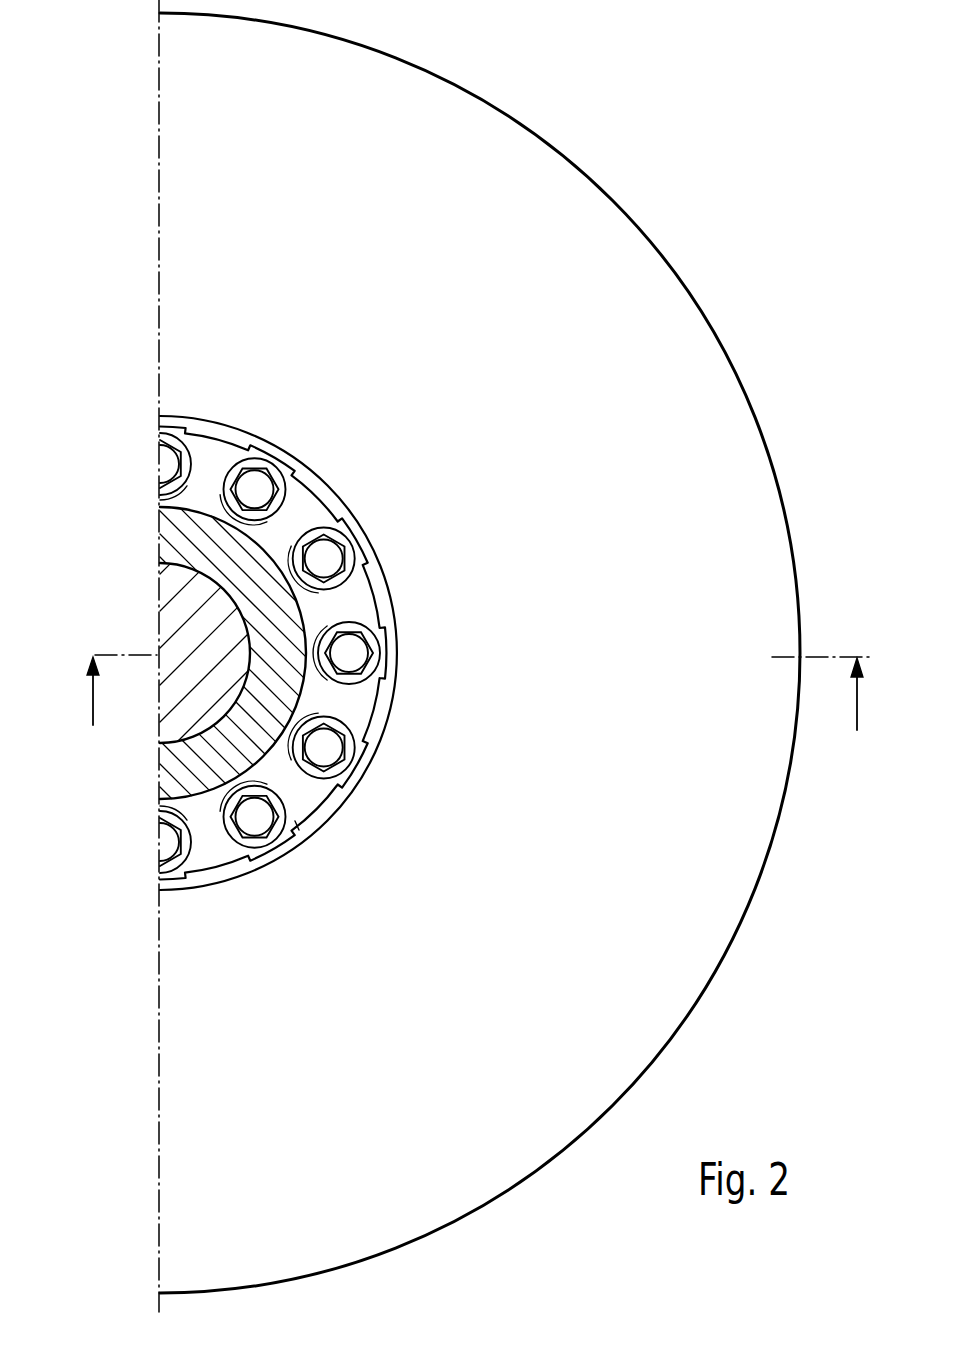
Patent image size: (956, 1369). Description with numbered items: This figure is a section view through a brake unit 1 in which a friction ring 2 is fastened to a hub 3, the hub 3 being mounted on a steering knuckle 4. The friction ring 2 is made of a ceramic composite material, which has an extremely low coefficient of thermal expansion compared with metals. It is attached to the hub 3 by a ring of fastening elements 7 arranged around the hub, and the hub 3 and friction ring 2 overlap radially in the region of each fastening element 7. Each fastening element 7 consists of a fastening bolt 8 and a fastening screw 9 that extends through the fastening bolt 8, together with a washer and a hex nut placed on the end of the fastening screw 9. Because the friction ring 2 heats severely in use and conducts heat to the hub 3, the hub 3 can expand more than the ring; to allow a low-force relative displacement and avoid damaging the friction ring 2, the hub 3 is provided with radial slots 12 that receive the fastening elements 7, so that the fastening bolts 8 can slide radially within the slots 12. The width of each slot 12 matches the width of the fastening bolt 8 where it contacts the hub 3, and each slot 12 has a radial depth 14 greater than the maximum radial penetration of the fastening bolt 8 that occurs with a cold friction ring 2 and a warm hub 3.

The brake unit 1 is at (472, 656).
The friction ring 2 is at (700, 382).
The hub 3 is at (178, 543).
The steering knuckle 4 is at (180, 608).
The fastening element 7 is at (170, 457).
The fastening bolt 8 is at (165, 418).
The fastening screw 9 is at (258, 478).
The radial slot 12 is at (293, 829).
The depth 14 is at (364, 731).